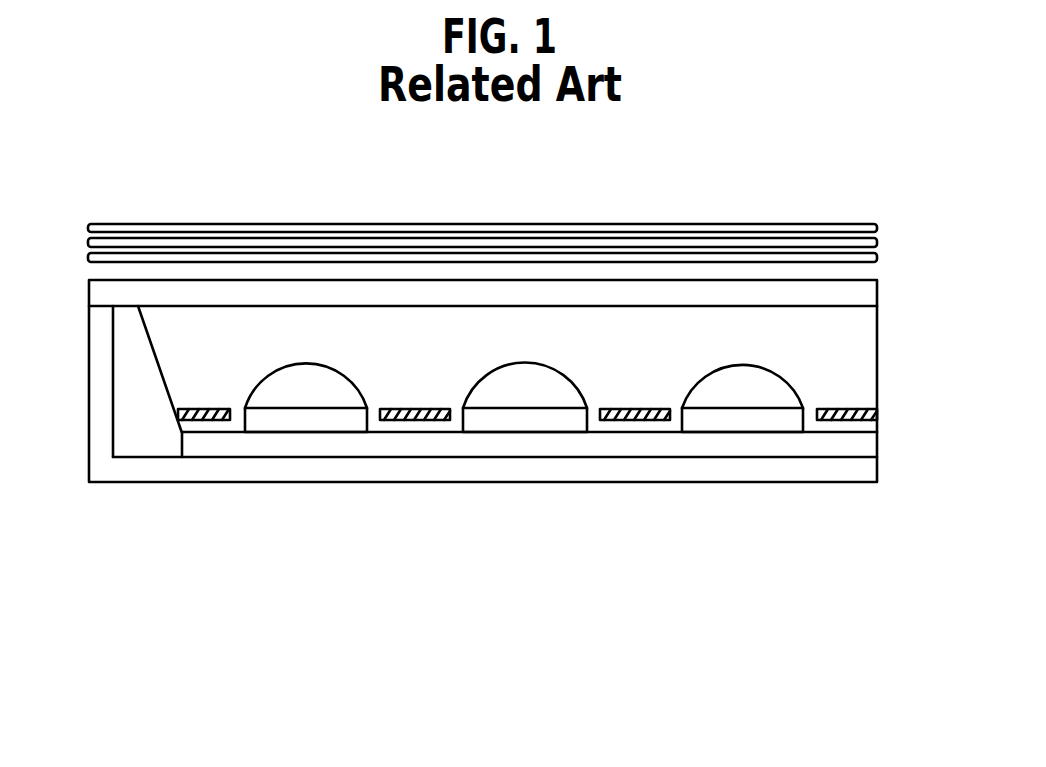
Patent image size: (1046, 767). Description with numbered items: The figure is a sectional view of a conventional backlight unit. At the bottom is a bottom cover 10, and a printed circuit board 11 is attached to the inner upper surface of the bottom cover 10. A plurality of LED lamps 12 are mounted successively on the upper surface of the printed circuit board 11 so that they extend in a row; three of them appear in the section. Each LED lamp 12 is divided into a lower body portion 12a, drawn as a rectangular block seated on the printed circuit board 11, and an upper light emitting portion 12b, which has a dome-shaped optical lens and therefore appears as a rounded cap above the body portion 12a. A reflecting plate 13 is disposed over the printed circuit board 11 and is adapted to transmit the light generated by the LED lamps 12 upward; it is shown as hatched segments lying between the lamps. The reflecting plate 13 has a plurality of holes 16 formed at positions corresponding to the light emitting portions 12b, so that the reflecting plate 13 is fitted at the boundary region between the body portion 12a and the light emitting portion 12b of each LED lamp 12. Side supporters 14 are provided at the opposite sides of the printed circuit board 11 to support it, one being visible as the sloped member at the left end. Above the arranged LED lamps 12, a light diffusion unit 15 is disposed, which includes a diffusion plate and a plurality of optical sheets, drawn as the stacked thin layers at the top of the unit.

The bottom cover 10 is at (868, 470).
The printed circuit board 11 is at (868, 446).
The LED lamp 12 is at (524, 477).
The body portion 12a is at (270, 425).
The light emitting portion 12b is at (327, 402).
The reflecting plate 13 is at (877, 414).
The side supporter 14 is at (118, 412).
The light diffusion unit 15 is at (890, 226).
The hole 16 is at (675, 405).